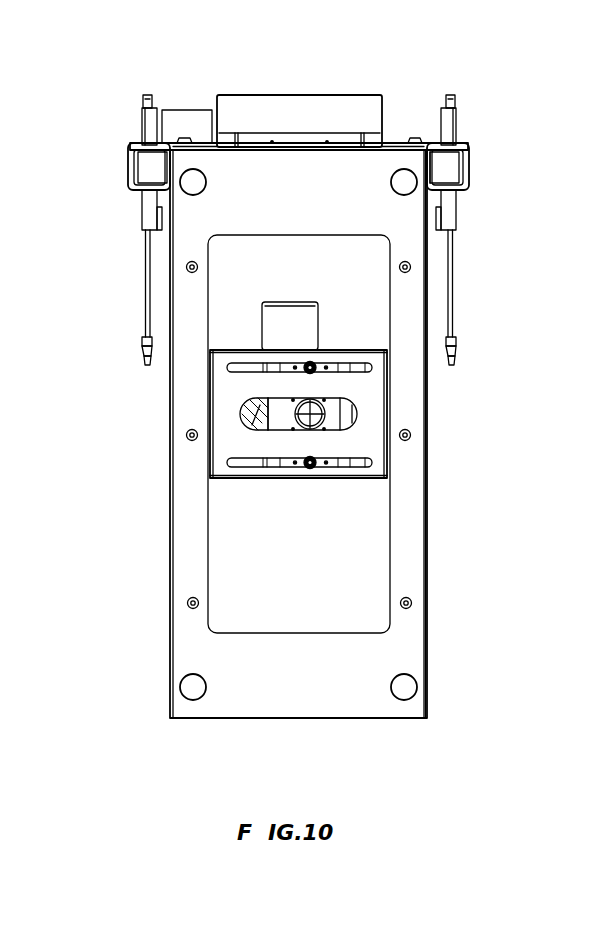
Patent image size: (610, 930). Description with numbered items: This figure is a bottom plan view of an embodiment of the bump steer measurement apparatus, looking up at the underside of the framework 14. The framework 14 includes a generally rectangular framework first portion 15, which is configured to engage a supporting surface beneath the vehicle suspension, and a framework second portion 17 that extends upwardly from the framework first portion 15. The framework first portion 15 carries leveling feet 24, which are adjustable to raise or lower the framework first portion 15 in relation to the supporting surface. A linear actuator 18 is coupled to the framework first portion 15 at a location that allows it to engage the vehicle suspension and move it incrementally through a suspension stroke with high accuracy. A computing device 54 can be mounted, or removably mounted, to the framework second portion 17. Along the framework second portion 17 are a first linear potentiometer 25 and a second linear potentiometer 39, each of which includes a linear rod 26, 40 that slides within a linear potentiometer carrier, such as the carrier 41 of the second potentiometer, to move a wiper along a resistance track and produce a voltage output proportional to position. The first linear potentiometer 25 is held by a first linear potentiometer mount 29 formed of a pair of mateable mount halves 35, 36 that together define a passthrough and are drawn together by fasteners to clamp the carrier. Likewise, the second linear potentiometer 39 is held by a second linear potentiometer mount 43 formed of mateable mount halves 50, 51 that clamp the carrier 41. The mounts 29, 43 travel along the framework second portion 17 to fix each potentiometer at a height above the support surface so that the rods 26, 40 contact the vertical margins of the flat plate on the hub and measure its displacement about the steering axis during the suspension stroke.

The framework 14 is at (443, 446).
The framework first portion 15 is at (415, 508).
The framework second portion 17 is at (438, 163).
The linear actuator 18 is at (312, 327).
The leveling feet 24 is at (193, 178).
The first linear potentiometer 25 is at (142, 370).
The linear rod 26 is at (147, 312).
The first linear potentiometer mount 29 is at (130, 157).
The mateable mount half 35 is at (142, 173).
The mateable mount half 36 is at (158, 158).
The second linear potentiometer 39 is at (462, 357).
The linear rod 40 is at (453, 287).
The linear potentiometer carrier 41 is at (450, 212).
The second linear potentiometer mount 43 is at (473, 151).
The mateable mount half 50 is at (457, 128).
The mateable mount half 51 is at (455, 170).
The computing device 54 is at (298, 110).